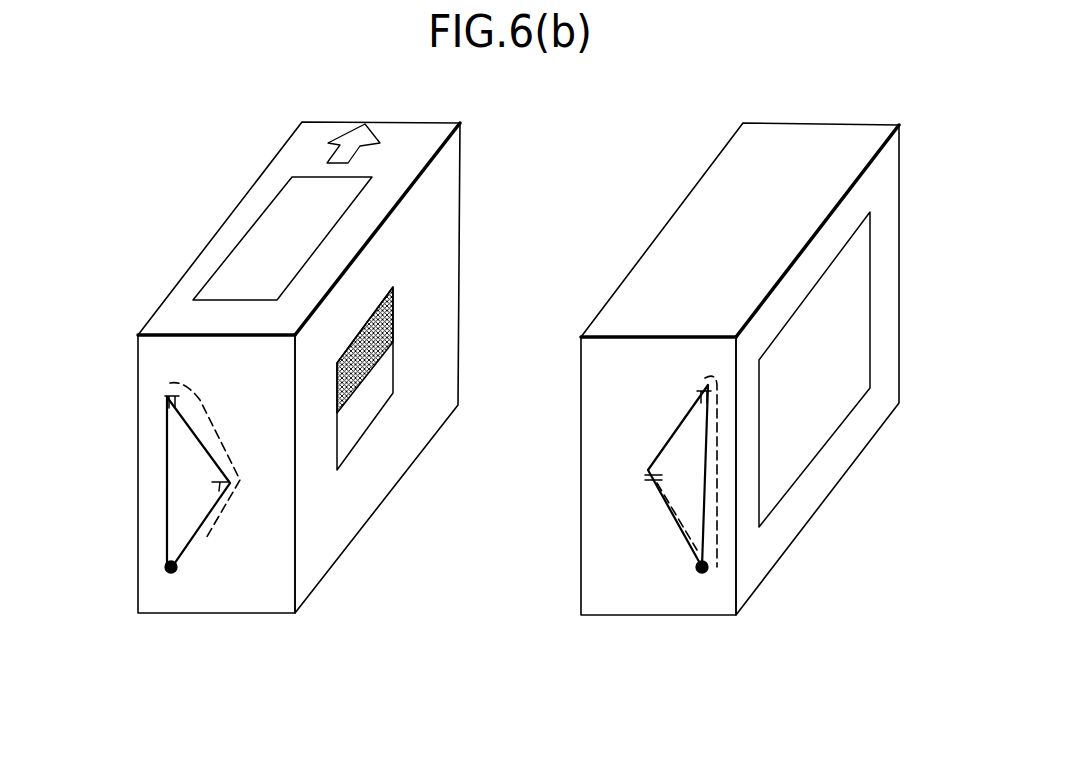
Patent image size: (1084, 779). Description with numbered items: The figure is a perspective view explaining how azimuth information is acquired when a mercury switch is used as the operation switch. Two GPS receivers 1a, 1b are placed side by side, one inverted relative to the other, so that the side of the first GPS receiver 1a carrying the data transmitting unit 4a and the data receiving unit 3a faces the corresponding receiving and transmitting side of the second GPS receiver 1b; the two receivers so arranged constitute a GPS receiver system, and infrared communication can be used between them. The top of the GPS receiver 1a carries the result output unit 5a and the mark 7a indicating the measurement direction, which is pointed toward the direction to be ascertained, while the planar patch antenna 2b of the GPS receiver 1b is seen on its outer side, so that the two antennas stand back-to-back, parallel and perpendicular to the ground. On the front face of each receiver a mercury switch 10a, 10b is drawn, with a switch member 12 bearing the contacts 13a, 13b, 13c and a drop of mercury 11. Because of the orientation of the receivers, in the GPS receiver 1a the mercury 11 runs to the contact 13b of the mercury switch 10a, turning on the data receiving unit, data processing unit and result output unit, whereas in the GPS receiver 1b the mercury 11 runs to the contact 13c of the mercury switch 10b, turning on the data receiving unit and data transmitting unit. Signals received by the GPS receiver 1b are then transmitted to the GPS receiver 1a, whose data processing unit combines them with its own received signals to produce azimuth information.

The GPS receiver 1a is at (320, 132).
The GPS receiver 1b is at (808, 135).
The planar patch antenna 2b is at (858, 305).
The data receiving unit 3a is at (394, 386).
The data transmitting unit 4a is at (397, 318).
The result output unit 5a is at (253, 240).
The mark indicating measurement direction 7a is at (356, 123).
The mercury switch 10a is at (153, 483).
The mercury switch 10b is at (635, 522).
The mercury 11 is at (192, 569).
The flap 12 is at (170, 452).
The engaging portion 13a is at (219, 492).
The contact 13b is at (165, 568).
The contact 13c is at (163, 400).